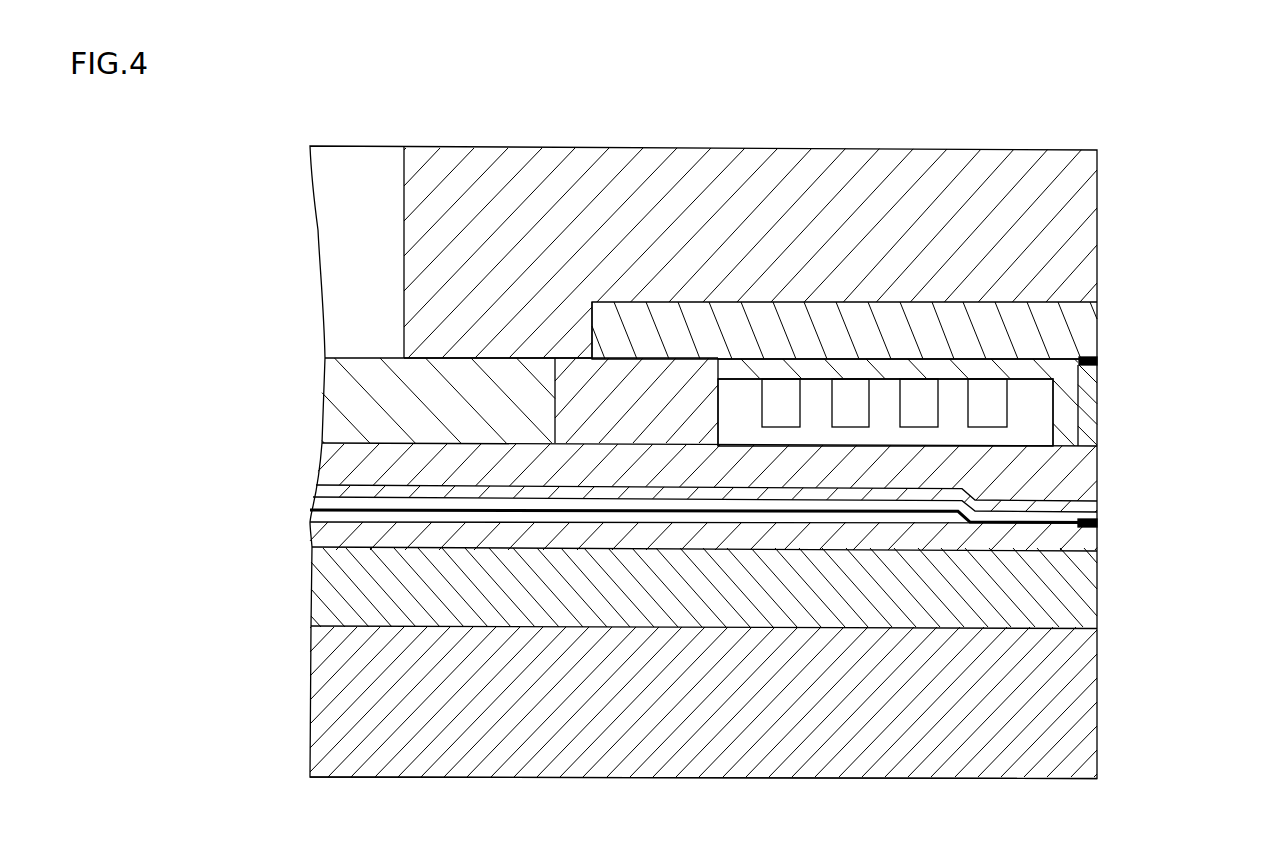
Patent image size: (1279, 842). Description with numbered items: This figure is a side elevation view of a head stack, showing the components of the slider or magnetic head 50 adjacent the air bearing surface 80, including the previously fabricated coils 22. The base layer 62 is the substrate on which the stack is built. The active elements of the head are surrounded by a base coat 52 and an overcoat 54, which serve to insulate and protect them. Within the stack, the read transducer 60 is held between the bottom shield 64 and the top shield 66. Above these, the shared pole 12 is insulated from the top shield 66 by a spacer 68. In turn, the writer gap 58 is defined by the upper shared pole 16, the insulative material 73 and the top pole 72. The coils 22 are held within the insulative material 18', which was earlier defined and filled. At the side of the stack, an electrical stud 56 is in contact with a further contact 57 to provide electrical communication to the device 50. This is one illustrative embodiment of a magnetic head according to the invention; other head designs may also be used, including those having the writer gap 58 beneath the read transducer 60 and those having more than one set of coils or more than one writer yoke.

The magnetic head 50 is at (1092, 122).
The electrical stud 56 is at (357, 211).
The overcoat 54 is at (956, 193).
The top pole 72 is at (1078, 327).
The insulative material 73 is at (1003, 366).
The writer gap 58 is at (1100, 362).
The upper shared pole 16 is at (1090, 412).
The insulative material 18' is at (885, 276).
The coils 22 is at (778, 395).
The shared pole 12 is at (1083, 470).
The spacer 68 is at (1090, 503).
The top shield 66 is at (1090, 513).
The further contact 57 is at (327, 517).
The read transducer 60 is at (1090, 524).
The bottom shield 64 is at (1087, 540).
The base coat 52 is at (1063, 605).
The base layer 62 is at (1075, 748).
The air bearing surface 80 is at (1120, 711).